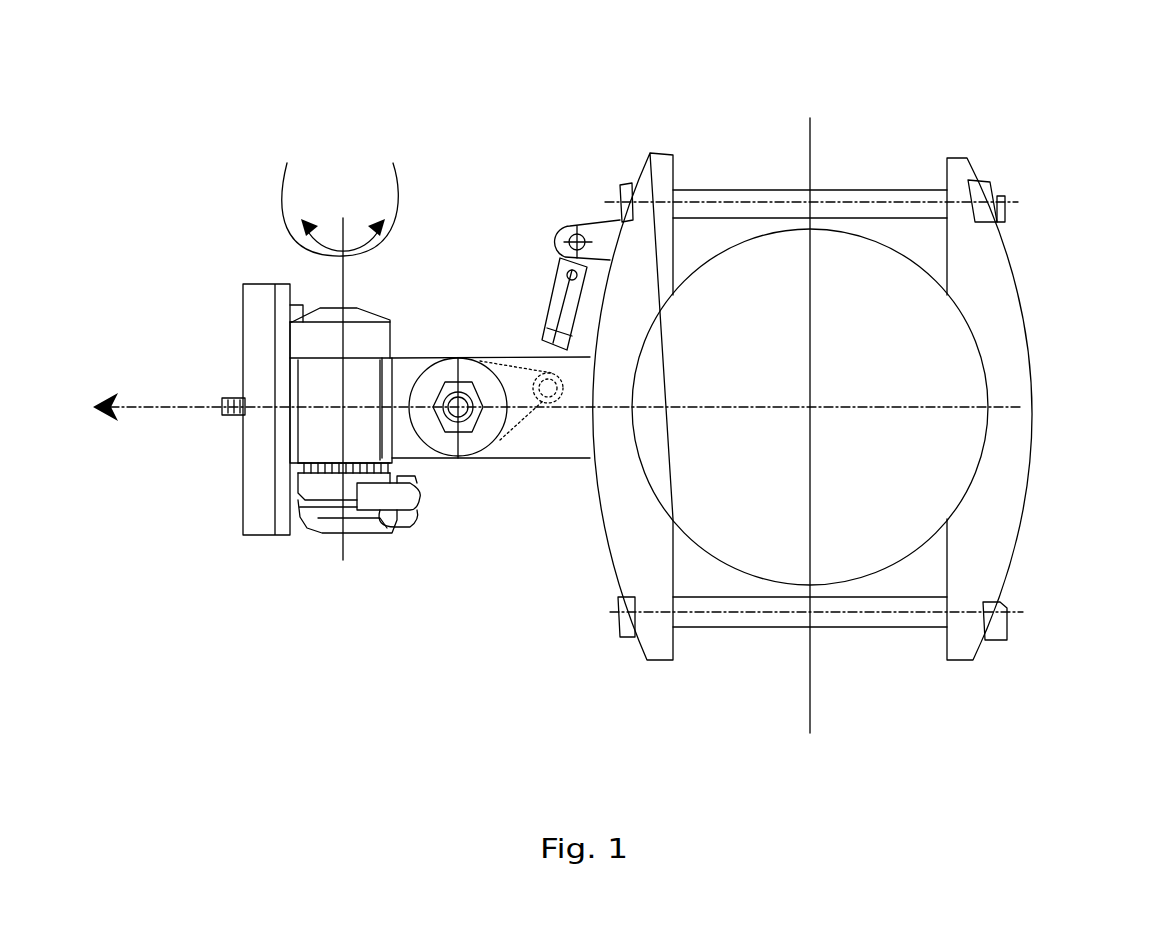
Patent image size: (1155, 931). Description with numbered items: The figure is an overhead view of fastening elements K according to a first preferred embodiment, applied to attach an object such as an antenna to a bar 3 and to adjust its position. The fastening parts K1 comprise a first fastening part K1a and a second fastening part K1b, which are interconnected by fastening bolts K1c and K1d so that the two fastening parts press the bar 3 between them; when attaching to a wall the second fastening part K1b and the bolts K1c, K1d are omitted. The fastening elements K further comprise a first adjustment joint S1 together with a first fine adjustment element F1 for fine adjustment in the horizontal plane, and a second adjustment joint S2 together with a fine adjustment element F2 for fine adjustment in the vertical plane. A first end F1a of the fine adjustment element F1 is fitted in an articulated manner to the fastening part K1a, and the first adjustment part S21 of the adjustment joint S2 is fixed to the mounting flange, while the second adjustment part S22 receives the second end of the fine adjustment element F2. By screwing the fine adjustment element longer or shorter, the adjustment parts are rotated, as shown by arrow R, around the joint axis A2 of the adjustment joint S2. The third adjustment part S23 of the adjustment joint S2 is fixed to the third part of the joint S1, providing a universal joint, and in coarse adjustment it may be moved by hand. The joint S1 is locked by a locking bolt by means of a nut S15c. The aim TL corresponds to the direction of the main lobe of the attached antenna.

The fastening elements K is at (466, 63).
The fastening parts K1 is at (723, 130).
The first fastening part K1a is at (660, 173).
The second fastening part K1b is at (1000, 300).
The fastening bolt K1c is at (835, 197).
The fastening bolt K1d is at (887, 620).
The bar 3 is at (837, 553).
The first fine adjustment element F1 is at (575, 230).
The first end of fine adjustment element F1 F1a is at (560, 215).
The fine adjustment element F2 is at (376, 560).
The first adjustment joint S1 is at (491, 429).
The nut S15c is at (447, 388).
The adjustment joint S2 is at (318, 406).
The first adjustment part of adjustment joint S2 S21 is at (303, 335).
The second adjustment part of adjustment joint S2 S22 is at (327, 487).
The third adjustment part of adjustment joint S2 S23 is at (328, 483).
The rotation arrow R is at (343, 346).
The joint axis A2 is at (334, 197).
The aim TL is at (145, 410).